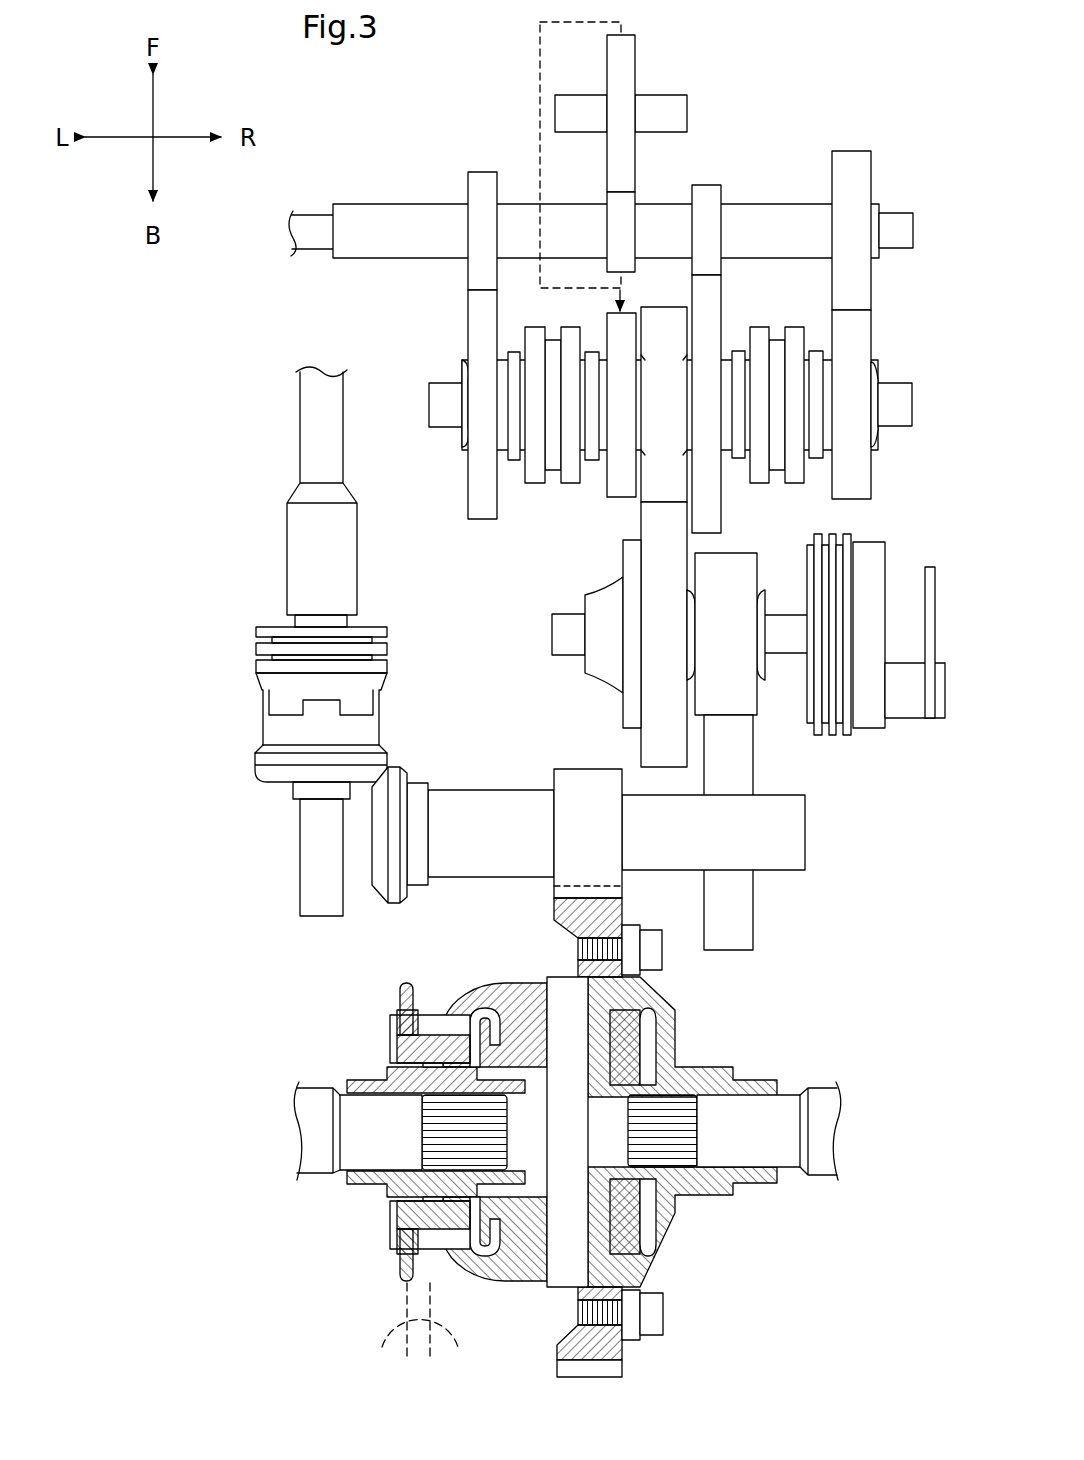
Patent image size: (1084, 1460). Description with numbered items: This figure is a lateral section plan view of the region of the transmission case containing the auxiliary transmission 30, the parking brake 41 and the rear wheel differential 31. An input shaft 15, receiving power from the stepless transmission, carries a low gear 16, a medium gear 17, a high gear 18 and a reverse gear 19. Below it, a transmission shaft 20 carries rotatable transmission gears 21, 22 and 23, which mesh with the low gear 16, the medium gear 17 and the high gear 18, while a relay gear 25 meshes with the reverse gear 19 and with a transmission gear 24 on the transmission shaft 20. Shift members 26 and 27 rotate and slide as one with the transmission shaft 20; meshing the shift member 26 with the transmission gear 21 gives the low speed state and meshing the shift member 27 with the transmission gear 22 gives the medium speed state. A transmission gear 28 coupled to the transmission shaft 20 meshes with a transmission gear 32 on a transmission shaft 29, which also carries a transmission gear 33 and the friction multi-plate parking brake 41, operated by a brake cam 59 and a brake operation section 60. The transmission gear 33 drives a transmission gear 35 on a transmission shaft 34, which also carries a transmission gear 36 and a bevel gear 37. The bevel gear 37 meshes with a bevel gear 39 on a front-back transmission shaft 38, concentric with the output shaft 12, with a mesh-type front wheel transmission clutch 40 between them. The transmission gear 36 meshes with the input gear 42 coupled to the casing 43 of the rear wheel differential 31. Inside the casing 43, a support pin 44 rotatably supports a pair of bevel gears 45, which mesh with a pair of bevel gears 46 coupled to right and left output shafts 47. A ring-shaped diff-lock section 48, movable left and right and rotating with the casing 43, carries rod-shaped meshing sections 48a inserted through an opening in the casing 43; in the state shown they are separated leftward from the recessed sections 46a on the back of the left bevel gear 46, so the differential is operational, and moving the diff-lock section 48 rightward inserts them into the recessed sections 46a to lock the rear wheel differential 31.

The output shaft 12 is at (308, 448).
The input shaft 15 is at (410, 204).
The low gear 16 is at (706, 185).
The medium gear 17 is at (480, 172).
The high gear 18 is at (851, 160).
The reverse gear 19 is at (626, 228).
The transmission shaft 20 is at (895, 403).
The transmission gear 21 is at (710, 300).
The transmission gear 22 is at (480, 491).
The transmission gear 23 is at (864, 470).
The transmission gear 24 is at (621, 480).
The relay gear 25 is at (625, 68).
The shift member 26 is at (778, 470).
The shift member 27 is at (553, 475).
The transmission gear 28 is at (653, 312).
The transmission shaft 29 is at (557, 618).
The auxiliary transmission 30 is at (240, 358).
The rear wheel differential 31 is at (248, 1070).
The transmission gear 32 is at (650, 748).
The transmission gear 33 is at (745, 700).
The transmission shaft 34 is at (790, 830).
The transmission gear 35 is at (742, 915).
The transmission gear 36 is at (583, 782).
The bevel gear 37 is at (382, 900).
The transmission shaft 38 is at (315, 855).
The bevel gear 39 is at (262, 760).
The front wheel transmission clutch 40 is at (245, 648).
The parking brake 41 is at (852, 745).
The input gear 42 is at (568, 905).
The casing 43 is at (655, 1265).
The support pin 44 is at (653, 1190).
The bevel gear 45 is at (613, 1010).
The bevel gear 46 is at (490, 1023).
The recessed section 46a is at (466, 1010).
The output shaft 47 is at (345, 1175).
The diff-lock section 48 is at (392, 1048).
The meshing section 48a is at (432, 1030).
The brake cam 59 is at (870, 730).
The brake operation section 60 is at (930, 567).